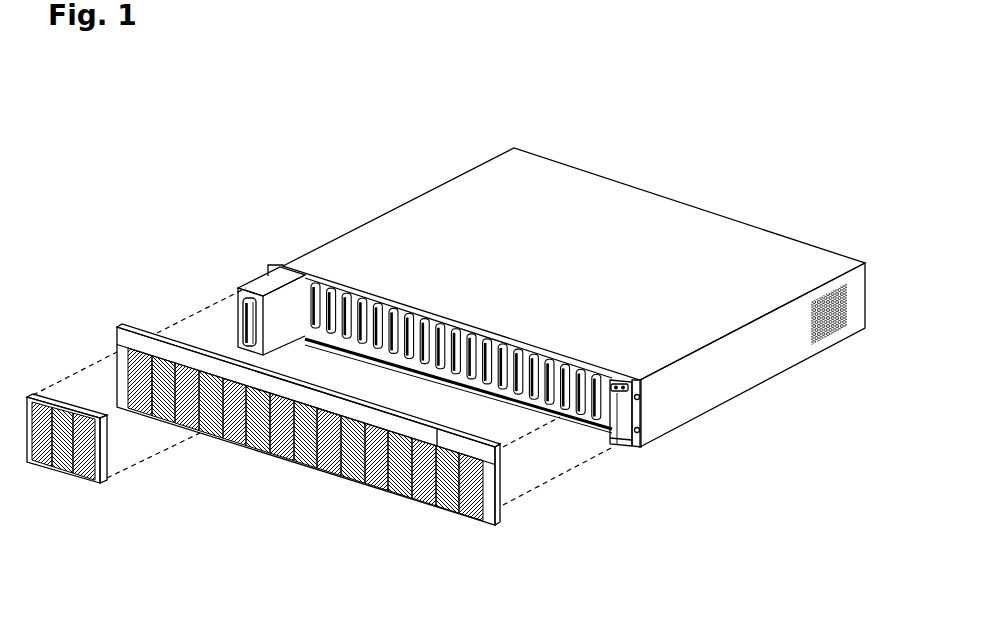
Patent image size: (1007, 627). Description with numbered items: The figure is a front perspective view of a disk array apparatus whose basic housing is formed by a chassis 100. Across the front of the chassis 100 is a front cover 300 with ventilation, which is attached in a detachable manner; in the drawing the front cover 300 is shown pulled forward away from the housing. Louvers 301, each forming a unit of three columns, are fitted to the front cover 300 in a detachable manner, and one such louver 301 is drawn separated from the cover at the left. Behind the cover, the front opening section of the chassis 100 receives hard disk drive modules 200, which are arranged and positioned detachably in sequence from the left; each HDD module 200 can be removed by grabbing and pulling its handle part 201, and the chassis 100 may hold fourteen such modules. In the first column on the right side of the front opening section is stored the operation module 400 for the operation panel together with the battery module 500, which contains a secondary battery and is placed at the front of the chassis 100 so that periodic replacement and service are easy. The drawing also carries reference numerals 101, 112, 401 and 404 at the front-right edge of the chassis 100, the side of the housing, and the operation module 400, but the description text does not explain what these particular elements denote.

The chassis 100 is at (348, 233).
The front frame rail 101 is at (696, 471).
The ventilation holes 112 is at (840, 328).
The hard disk drive module 200 is at (229, 270).
The handle part 201 is at (238, 305).
The front cover 300 is at (118, 328).
The louver 301 is at (70, 478).
The operation module 400 is at (496, 349).
The connector 401 is at (617, 383).
The screw hole 404 is at (643, 405).
The battery module 500 is at (626, 440).